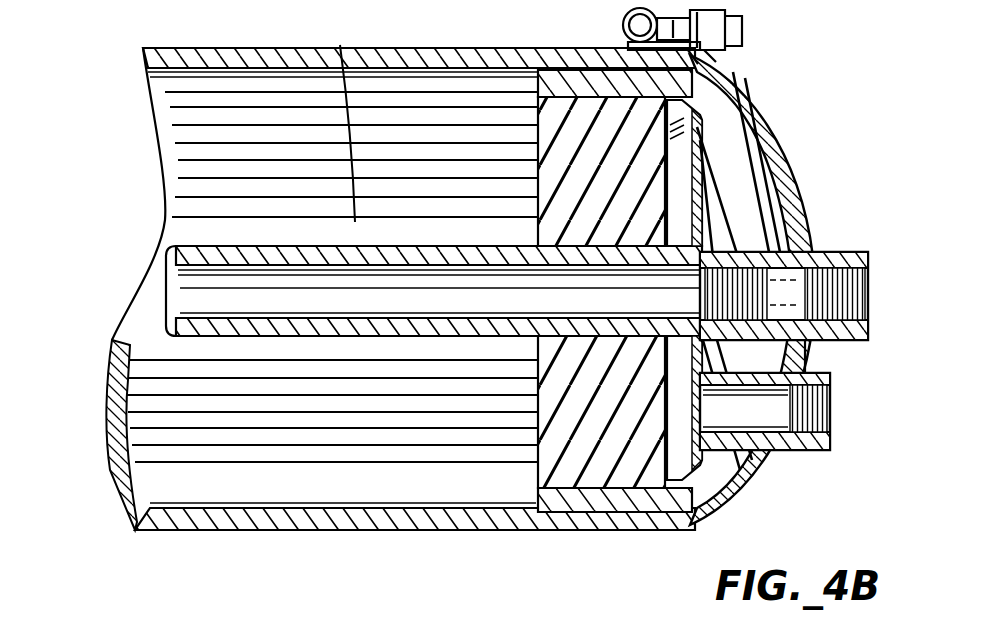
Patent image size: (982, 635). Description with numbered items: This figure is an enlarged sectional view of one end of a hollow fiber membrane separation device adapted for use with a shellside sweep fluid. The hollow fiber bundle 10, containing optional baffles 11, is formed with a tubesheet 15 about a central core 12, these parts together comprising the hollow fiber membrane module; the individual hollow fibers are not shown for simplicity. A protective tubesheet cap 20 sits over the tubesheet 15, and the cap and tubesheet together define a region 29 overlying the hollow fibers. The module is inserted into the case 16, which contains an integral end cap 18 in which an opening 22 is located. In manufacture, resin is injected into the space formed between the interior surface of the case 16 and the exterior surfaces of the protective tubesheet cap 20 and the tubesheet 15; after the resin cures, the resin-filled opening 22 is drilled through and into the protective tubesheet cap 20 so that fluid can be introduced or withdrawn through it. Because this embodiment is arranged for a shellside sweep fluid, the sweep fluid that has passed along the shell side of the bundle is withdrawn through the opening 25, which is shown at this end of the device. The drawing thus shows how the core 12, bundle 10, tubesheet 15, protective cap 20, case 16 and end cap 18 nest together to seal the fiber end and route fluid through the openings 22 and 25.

The hollow fiber bundle 10 is at (243, 160).
The baffles 11 is at (322, 175).
The core 12 is at (170, 324).
The tubesheet 15 is at (588, 107).
The case 16 is at (163, 57).
The integral end cap 18 is at (748, 478).
The protective tubesheet cap 20 is at (703, 122).
The opening 22 is at (832, 427).
The opening 25 is at (838, 262).
The region 29 is at (700, 195).